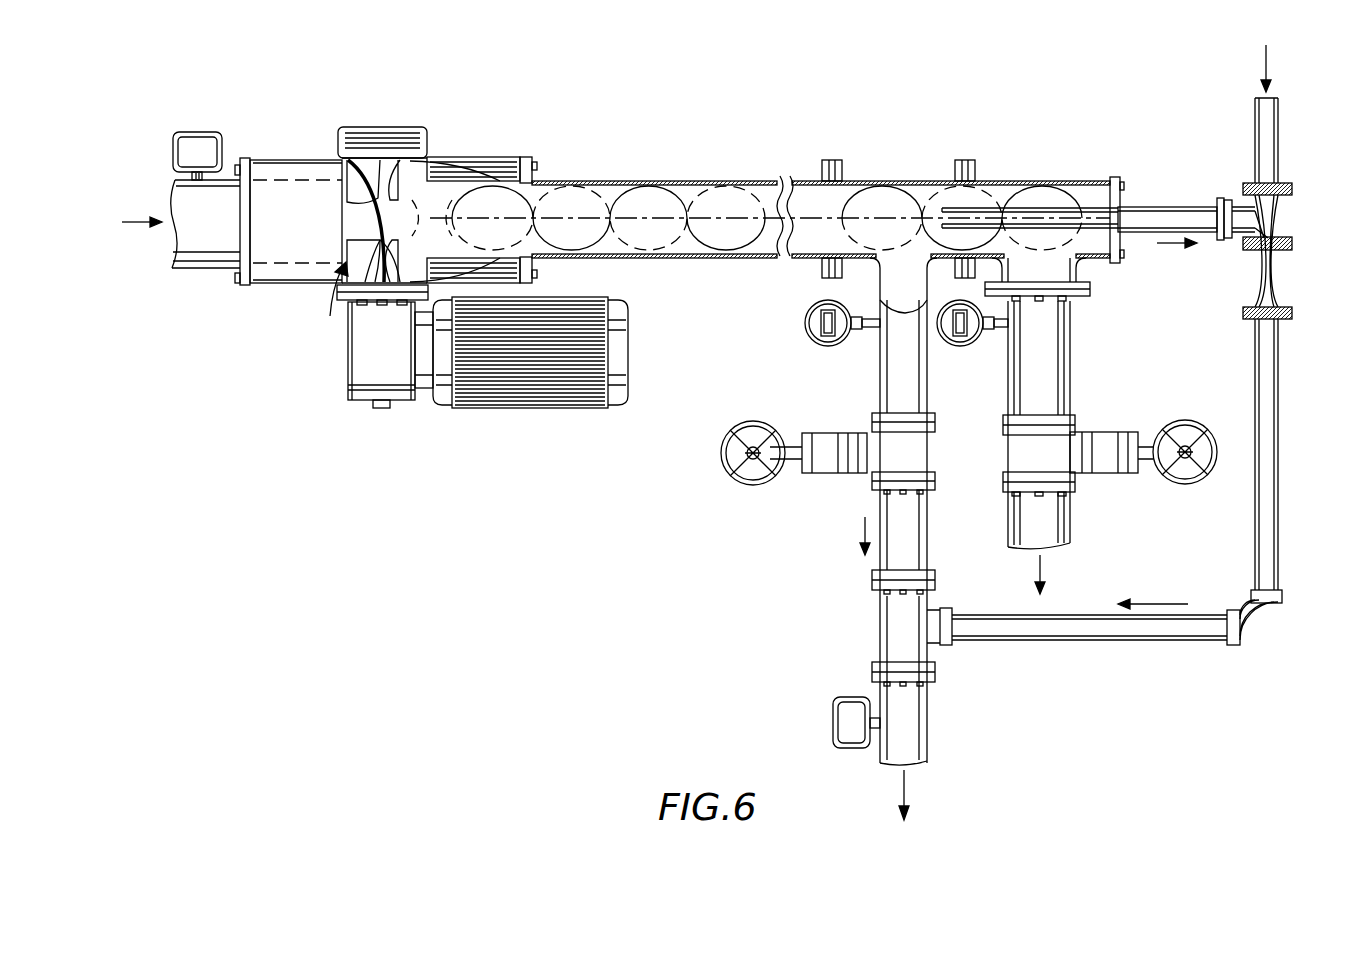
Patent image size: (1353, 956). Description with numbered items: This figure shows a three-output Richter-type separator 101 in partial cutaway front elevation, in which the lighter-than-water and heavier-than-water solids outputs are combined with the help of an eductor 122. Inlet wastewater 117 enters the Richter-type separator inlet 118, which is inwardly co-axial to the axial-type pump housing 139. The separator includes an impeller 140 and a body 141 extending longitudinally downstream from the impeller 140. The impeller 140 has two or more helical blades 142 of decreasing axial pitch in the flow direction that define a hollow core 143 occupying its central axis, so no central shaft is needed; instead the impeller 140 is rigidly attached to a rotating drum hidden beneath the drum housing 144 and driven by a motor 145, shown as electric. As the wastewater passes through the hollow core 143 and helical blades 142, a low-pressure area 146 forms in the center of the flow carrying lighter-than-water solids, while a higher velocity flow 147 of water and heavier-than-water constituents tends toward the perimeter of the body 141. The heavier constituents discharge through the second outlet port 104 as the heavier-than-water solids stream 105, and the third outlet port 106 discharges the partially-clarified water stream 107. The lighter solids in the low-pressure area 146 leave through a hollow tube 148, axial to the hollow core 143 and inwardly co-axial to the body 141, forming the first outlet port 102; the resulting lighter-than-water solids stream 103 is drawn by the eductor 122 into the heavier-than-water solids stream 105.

The three-output Richter-type separator 101 is at (781, 84).
The first outlet port 102 is at (1160, 205).
The lighter-than-water solids stream 103 is at (1162, 248).
The second outlet port 104 is at (880, 345).
The heavier-than-water solids stream 105 is at (858, 523).
The third outlet port 106 is at (1070, 322).
The partially-clarified water stream 107 is at (1035, 565).
The inlet wastewater 117 is at (130, 220).
The Richter-type separator inlet 118 is at (185, 270).
The eductor 122 is at (1253, 280).
The axial-type pump housing 139 is at (470, 157).
The impeller 140 is at (315, 300).
The body 141 is at (558, 180).
The helical blades 142 is at (345, 185).
The hollow core 143 is at (368, 234).
The drum housing 144 is at (346, 382).
The motor 145 is at (628, 348).
The low-pressure area 146 is at (650, 195).
The higher velocity flow 147 is at (915, 181).
The hollow tube 148 is at (1000, 195).